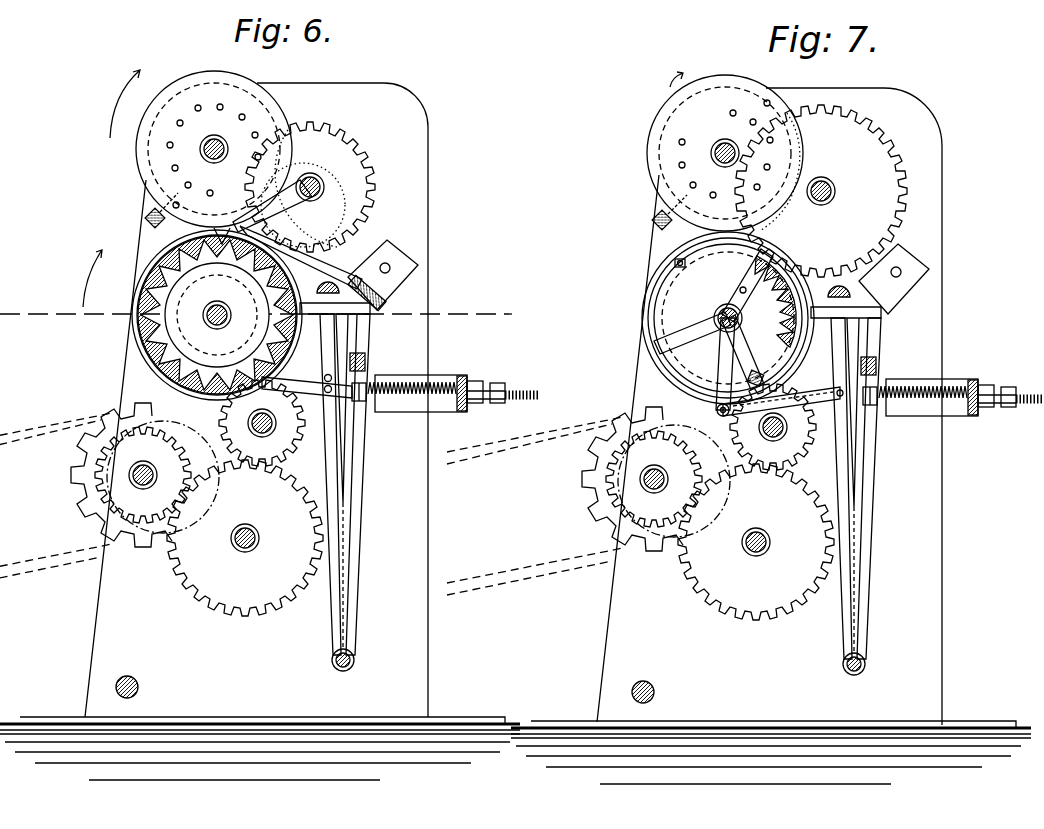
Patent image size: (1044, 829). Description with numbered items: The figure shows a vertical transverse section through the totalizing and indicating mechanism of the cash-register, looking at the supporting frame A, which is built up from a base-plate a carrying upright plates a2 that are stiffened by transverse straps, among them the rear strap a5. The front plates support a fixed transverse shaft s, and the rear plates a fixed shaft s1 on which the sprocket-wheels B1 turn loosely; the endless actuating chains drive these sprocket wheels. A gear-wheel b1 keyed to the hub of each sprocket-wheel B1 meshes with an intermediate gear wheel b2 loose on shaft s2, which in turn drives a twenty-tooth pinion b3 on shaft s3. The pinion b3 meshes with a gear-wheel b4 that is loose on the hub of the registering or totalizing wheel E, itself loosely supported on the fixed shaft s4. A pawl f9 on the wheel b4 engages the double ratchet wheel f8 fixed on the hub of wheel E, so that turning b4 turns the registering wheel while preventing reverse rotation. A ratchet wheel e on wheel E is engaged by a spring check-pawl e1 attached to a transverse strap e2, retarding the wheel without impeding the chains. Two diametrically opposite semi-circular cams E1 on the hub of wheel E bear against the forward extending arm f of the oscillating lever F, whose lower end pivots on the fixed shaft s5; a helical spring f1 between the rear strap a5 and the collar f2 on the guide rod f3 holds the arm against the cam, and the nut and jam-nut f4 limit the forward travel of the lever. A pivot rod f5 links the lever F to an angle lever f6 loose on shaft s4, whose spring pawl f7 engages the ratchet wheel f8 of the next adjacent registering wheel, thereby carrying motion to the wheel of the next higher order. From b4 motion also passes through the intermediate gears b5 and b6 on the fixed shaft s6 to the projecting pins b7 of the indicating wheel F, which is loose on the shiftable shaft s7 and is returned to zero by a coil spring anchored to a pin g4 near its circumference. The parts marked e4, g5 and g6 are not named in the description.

In FIG. 6, the supporting frame A is at (438, 618).
In FIG. 7, the supporting frame A is at (772, 406).
In FIG. 6, the base-plate a is at (246, 714).
In FIG. 7, the base-plate a is at (771, 743).
In FIG. 6, the upright front plate a2 is at (260, 419).
In FIG. 7, the upright front plate a2 is at (738, 385).
In FIG. 6, the transverse rear strap a5 is at (447, 376).
In FIG. 7, the transverse rear strap a5 is at (961, 385).
In FIG. 6, the sprocket-wheel B1 is at (73, 481).
In FIG. 7, the sprocket-wheel B1 is at (588, 501).
In FIG. 6, the gear-wheel b1 is at (143, 475).
In FIG. 7, the gear-wheel b1 is at (654, 479).
In FIG. 6, the intermediate gear wheel b2 is at (245, 538).
In FIG. 7, the intermediate gear wheel b2 is at (756, 542).
In FIG. 6, the pinion b3 is at (277, 449).
In FIG. 7, the pinion b3 is at (779, 427).
In FIG. 7, the gear-wheel b4 is at (720, 326).
In FIG. 6, the intermediate gear wheel b5 is at (327, 203).
In FIG. 7, the intermediate gear wheel b5 is at (821, 191).
In FIG. 6, the transmitting gear-wheel b6 is at (322, 187).
In FIG. 6, the projecting pins b7 is at (213, 148).
In FIG. 7, the projecting pins b7 is at (715, 145).
In FIG. 6, the registering or totalizing wheel E is at (137, 280).
In FIG. 7, the registering or totalizing wheel E is at (710, 318).
In FIG. 6, the semi-circular cam E1 is at (300, 376).
In FIG. 6, the ratchet wheel e is at (267, 293).
In FIG. 6, the spring check-pawl e1 is at (272, 206).
In FIG. 6, the transverse strap e2 is at (383, 275).
In FIG. 7, the transverse strap e2 is at (894, 280).
In FIG. 6, the pawl end e4 is at (367, 284).
In FIG. 6, the oscillating lever F is at (192, 82).
In FIG. 7, the oscillating lever F is at (755, 367).
In FIG. 6, the forward extending arm f is at (322, 294).
In FIG. 7, the forward extending arm f is at (844, 293).
In FIG. 6, the helical spring f1 is at (368, 385).
In FIG. 7, the helical spring f1 is at (888, 376).
In FIG. 6, the collar or nut f2 is at (365, 363).
In FIG. 7, the collar or nut f2 is at (877, 362).
In FIG. 6, the guide rod f3 is at (507, 383).
In FIG. 7, the guide rod f3 is at (1020, 388).
In FIG. 6, the nut and jam-nut f4 is at (485, 381).
In FIG. 7, the nut and jam-nut f4 is at (992, 383).
In FIG. 7, the pivot rod f5 is at (780, 392).
In FIG. 7, the angle lever f6 is at (709, 361).
In FIG. 7, the spring pawl f7 is at (710, 280).
In FIG. 7, the double ratchet wheel f8 is at (732, 281).
In FIG. 7, the pawl f9 is at (668, 253).
In FIG. 6, the pin g4 is at (180, 206).
In FIG. 7, the pin g4 is at (777, 82).
In FIG. 6, the pin g5 is at (166, 194).
In FIG. 7, the pin g5 is at (681, 218).
In FIG. 6, the stop block g6 is at (147, 215).
In FIG. 7, the stop block g6 is at (643, 219).
In FIG. 6, the fixed transverse shaft s is at (259, 315).
In FIG. 6, the fixed transverse shaft s1 is at (142, 481).
In FIG. 7, the fixed transverse shaft s1 is at (663, 481).
In FIG. 6, the fixed transverse shaft s2 is at (253, 542).
In FIG. 7, the fixed transverse shaft s2 is at (774, 542).
In FIG. 6, the shaft s3 is at (269, 423).
In FIG. 7, the shaft s3 is at (782, 427).
In FIG. 6, the fixed transverse shaft s4 is at (224, 319).
In FIG. 7, the fixed transverse shaft s4 is at (718, 312).
In FIG. 6, the fixed transverse shaft s5 is at (341, 671).
In FIG. 7, the fixed transverse shaft s5 is at (862, 669).
In FIG. 6, the fixed shaft s6 is at (313, 180).
In FIG. 7, the fixed shaft s6 is at (836, 191).
In FIG. 6, the transverse shaft s7 is at (214, 139).
In FIG. 7, the transverse shaft s7 is at (719, 148).